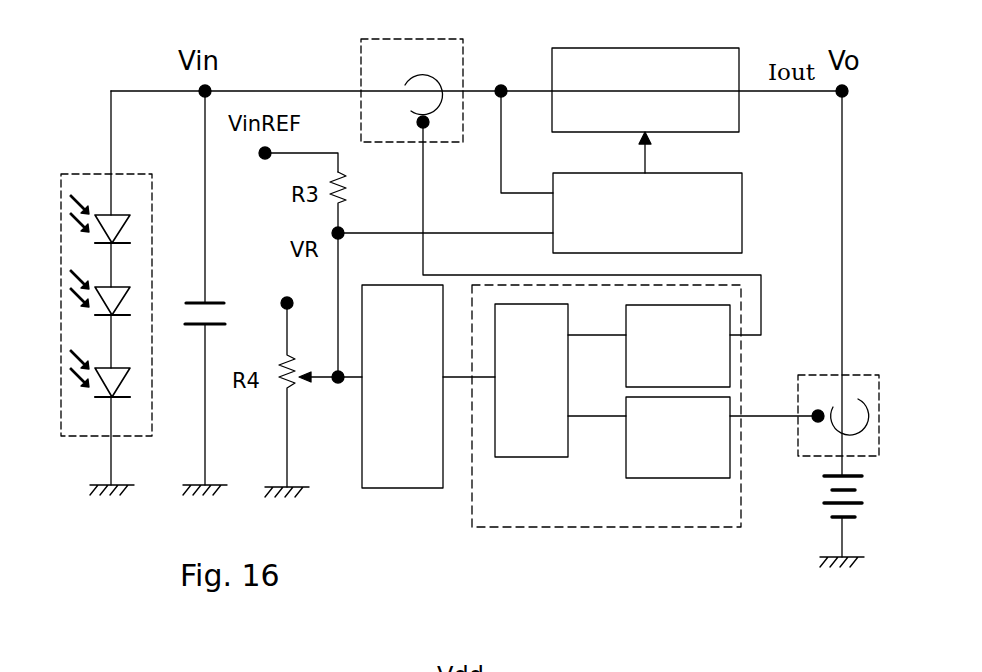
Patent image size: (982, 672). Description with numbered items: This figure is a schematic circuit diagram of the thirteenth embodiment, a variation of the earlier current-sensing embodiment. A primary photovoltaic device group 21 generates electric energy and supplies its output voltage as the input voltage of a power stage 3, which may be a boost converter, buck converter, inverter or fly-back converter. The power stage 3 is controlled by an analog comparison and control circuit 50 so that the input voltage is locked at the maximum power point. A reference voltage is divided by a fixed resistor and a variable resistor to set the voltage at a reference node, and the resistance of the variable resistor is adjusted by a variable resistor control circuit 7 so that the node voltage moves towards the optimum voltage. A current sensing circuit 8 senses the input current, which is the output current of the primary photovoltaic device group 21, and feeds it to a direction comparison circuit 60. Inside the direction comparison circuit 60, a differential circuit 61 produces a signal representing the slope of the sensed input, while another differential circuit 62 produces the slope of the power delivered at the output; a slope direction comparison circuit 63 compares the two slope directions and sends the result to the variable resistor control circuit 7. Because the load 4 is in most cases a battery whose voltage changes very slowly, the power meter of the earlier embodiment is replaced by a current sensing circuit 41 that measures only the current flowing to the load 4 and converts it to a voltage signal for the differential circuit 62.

The primary photovoltaic device group 21 is at (101, 174).
The current sensing circuit 8 is at (455, 142).
The power stage 3 is at (739, 110).
The analog comparison and control circuit 50 is at (742, 197).
The variable resistor control circuit 7 is at (402, 488).
The direction comparison circuit 60 is at (540, 527).
The differential circuit 61 is at (625, 347).
The differential circuit 62 is at (625, 447).
The slope direction comparison circuit 63 is at (545, 457).
The current sensing circuit 41 is at (822, 375).
The load 4 is at (815, 497).